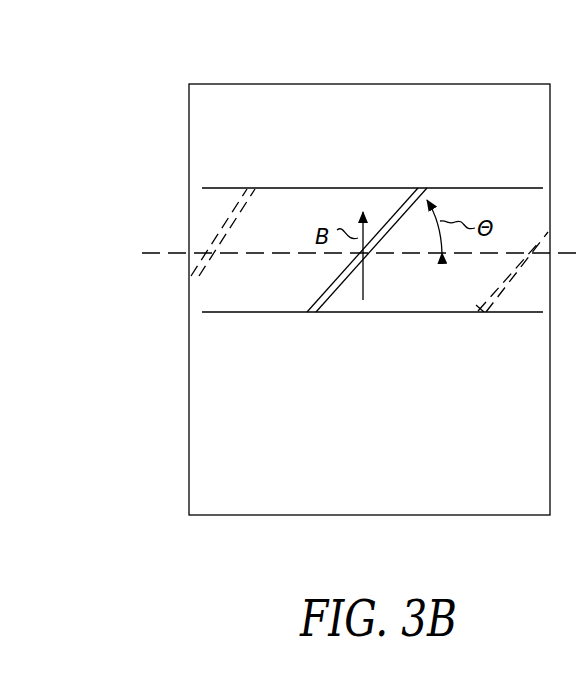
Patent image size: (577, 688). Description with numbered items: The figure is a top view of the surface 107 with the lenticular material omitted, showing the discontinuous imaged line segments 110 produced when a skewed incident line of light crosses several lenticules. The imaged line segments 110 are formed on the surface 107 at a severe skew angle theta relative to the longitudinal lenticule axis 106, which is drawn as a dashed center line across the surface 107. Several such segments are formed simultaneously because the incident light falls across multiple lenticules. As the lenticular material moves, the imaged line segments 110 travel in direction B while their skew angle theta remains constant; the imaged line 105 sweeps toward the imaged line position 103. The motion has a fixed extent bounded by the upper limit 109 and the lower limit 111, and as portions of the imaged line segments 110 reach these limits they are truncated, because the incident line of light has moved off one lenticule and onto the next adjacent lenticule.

The imaged line position 103 is at (240, 228).
The imaged line 105 is at (330, 295).
The lenticule axis 106 is at (163, 253).
The surface 107 is at (418, 98).
The upper limit 109 is at (222, 188).
The imaged line segments 110 is at (545, 231).
The lower limit 111 is at (447, 312).